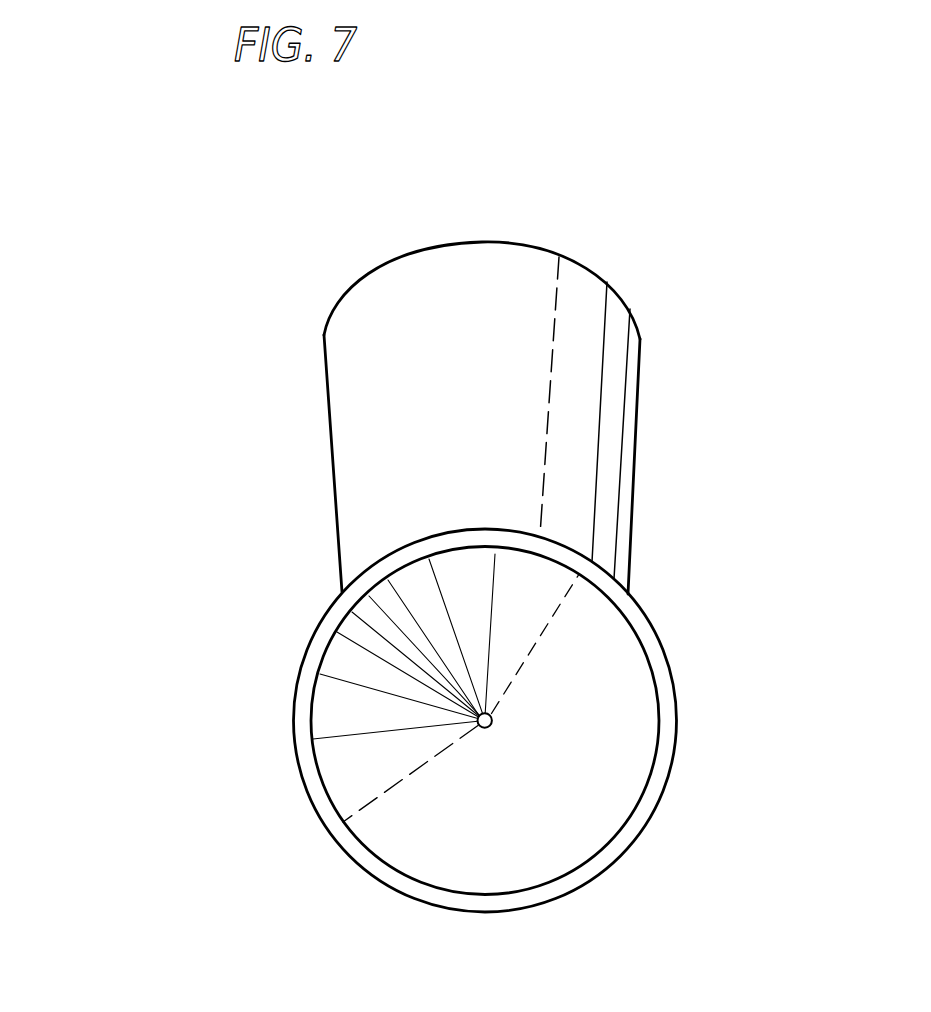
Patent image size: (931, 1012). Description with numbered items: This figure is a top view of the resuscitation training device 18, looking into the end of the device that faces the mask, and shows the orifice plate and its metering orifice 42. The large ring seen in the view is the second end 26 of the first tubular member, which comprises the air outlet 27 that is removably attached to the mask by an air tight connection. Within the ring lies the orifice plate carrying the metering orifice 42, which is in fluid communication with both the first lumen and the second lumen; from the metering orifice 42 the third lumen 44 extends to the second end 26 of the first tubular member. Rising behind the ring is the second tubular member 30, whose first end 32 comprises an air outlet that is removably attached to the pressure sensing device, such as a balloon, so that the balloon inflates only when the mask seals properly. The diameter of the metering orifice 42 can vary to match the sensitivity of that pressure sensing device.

The resuscitation training device 18 is at (183, 517).
The first end of the second tubular member 32 is at (518, 240).
The second tubular member 30 is at (635, 427).
The second end of the first tubular member 26 is at (675, 730).
The air outlet 27 is at (575, 863).
The third lumen 44 is at (600, 702).
The metering orifice 42 is at (482, 726).